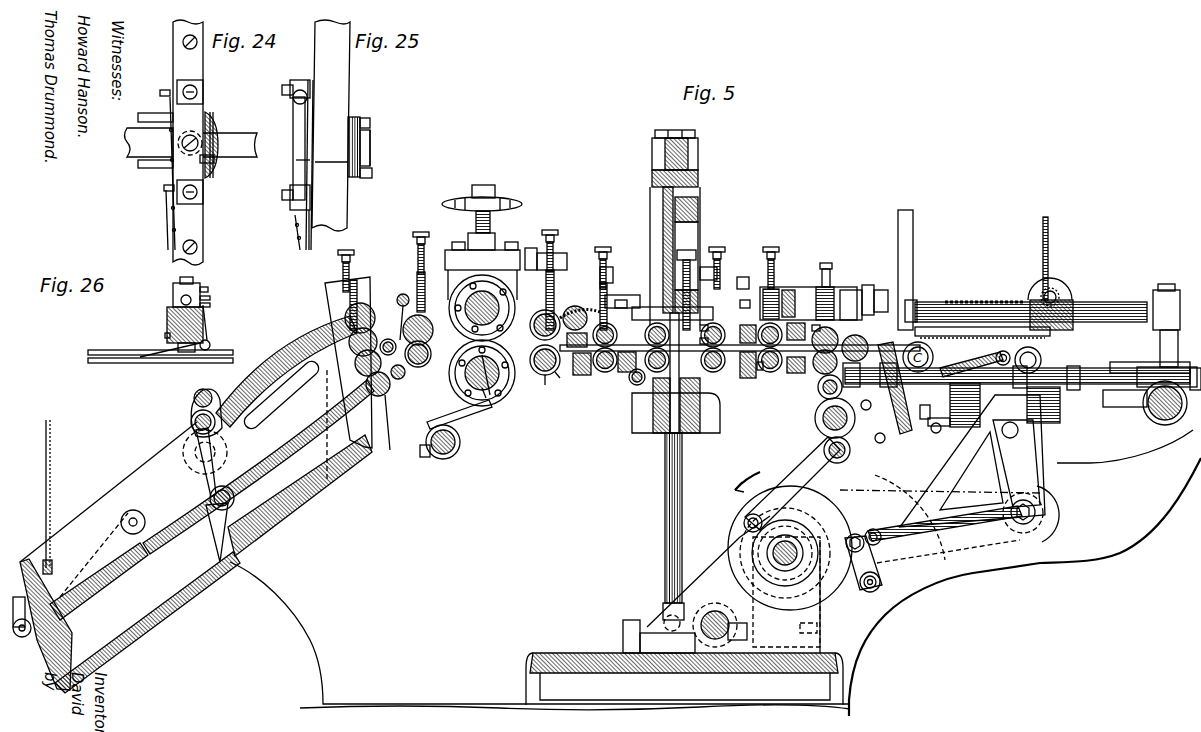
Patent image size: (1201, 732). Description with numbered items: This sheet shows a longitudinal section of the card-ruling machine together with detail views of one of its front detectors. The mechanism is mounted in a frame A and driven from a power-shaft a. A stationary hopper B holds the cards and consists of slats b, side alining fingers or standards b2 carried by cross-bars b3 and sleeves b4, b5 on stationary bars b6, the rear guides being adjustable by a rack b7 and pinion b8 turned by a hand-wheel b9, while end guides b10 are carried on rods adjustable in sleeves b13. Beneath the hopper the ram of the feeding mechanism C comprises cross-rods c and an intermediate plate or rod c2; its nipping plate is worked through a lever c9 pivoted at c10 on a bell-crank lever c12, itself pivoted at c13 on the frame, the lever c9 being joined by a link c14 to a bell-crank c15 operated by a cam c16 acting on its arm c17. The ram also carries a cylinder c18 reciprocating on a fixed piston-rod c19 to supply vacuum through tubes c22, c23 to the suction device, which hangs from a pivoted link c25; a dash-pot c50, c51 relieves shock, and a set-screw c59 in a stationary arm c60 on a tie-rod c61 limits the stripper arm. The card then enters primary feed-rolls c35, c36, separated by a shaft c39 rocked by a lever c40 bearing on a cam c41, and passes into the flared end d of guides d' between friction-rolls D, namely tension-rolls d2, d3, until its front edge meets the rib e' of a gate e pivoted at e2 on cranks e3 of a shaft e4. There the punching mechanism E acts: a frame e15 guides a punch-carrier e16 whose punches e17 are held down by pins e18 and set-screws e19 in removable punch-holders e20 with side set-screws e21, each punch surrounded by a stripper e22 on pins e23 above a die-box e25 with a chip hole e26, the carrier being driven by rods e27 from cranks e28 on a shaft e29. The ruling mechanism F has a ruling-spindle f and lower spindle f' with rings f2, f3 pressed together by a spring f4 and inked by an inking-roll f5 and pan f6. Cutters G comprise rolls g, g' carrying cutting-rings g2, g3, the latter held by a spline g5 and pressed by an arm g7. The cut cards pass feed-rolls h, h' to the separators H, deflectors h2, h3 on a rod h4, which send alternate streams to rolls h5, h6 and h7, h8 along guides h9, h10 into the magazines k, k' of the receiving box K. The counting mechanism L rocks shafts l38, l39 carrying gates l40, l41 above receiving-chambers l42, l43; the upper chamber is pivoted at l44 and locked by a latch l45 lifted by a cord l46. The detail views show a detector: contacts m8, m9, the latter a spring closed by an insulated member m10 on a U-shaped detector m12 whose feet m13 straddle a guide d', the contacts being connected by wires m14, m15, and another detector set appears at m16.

In FIG. 5, the frame A is at (1035, 560).
In FIG. 5, the hopper B is at (1031, 282).
In FIG. 5, the feeding mechanism C is at (845, 279).
In FIG. 5, the friction-rolls D is at (778, 274).
In FIG. 5, the punching mechanism E is at (683, 227).
In FIG. 5, the marking or ruling mechanism F is at (553, 256).
In FIG. 5, the cutters G is at (489, 229).
In FIG. 5, the separators H is at (360, 347).
In FIG. 5, the receiving box or magazine K is at (258, 435).
In FIG. 5, the counting mechanism L is at (187, 413).
In FIG. 5, the power-shaft a is at (800, 540).
In FIG. 5, the slats b is at (946, 326).
In FIG. 5, the side alining fingers or standards b2 is at (1048, 252).
In FIG. 5, the cross-bars b3 is at (862, 292).
In FIG. 5, the sleeves b4 is at (880, 292).
In FIG. 5, the sleeves b5 is at (1070, 326).
In FIG. 5, the stationary tubes or bars b6 is at (1118, 308).
In FIG. 5, the rack b7 is at (976, 302).
In FIG. 5, the pinion b8 is at (1055, 284).
In FIG. 5, the hand-wheel b9 is at (1072, 283).
In FIG. 5, the end guides or standards b10 is at (908, 252).
In FIG. 5, the sleeves b13 is at (914, 295).
In FIG. 5, the cross-rods c is at (1032, 360).
In FIG. 5, the intermediate plate or rod c2 is at (971, 359).
In FIG. 5, the lever c9 is at (1022, 455).
In FIG. 5, the pivot c10 is at (1019, 431).
In FIG. 5, the bell-crank lever c12 is at (1035, 478).
In FIG. 5, the pivot c13 is at (1036, 512).
In FIG. 5, the link c14 is at (950, 538).
In FIG. 5, the bell-crank c15 is at (870, 553).
In FIG. 5, the cam c16 is at (730, 533).
In FIG. 5, the arm c17 is at (855, 590).
In FIG. 5, the cylinder c18 is at (1060, 410).
In FIG. 5, the piston-rod c19 is at (1090, 405).
In FIG. 5, the tube c22 is at (912, 388).
In FIG. 5, the tube c23 is at (940, 435).
In FIG. 5, the pivoted link c25 is at (965, 413).
In FIG. 5, the feed-roll c35 is at (828, 335).
In FIG. 5, the feed-roll c36 is at (830, 414).
In FIG. 5, the shaft c39 is at (826, 448).
In FIG. 5, the lever c40 is at (812, 473).
In FIG. 5, the cam c41 is at (740, 553).
In FIG. 5, the dash-pot arrangement c50 is at (1076, 368).
In FIG. 5, the dash-pot arrangement c51 is at (1125, 364).
In FIG. 5, the set-screw c59 is at (884, 417).
In FIG. 5, the stationary arm c60 is at (920, 429).
In FIG. 5, the tie rod or brace c61 is at (890, 443).
In FIG. 25, the flared open end d is at (389, 148).
In FIG. 26, the flared open end d is at (160, 376).
In FIG. 5, the flared open end d is at (779, 362).
In FIG. 24, the guides d' is at (186, 161).
In FIG. 25, the guides d' is at (381, 146).
In FIG. 26, the guides d' is at (160, 339).
In FIG. 5, the guides d' is at (819, 403).
In FIG. 5, the tension-roll or friction-feed d2 is at (747, 378).
In FIG. 5, the tension-roll or friction-feed d3 is at (780, 318).
In FIG. 5, the gate e is at (740, 347).
In FIG. 5, the rib e' is at (612, 341).
In FIG. 5, the pivot e2 is at (625, 372).
In FIG. 5, the cranks e3 is at (632, 385).
In FIG. 5, the shaft e4 is at (640, 410).
In FIG. 5, the frame e15 is at (690, 150).
In FIG. 5, the punch-carrier e16 is at (675, 232).
In FIG. 5, the punch e17 is at (692, 312).
In FIG. 5, the pin e18 is at (700, 300).
In FIG. 5, the set-screw e19 is at (690, 250).
In FIG. 5, the punch-holder e20 is at (663, 318).
In FIG. 5, the side set-screw e21 is at (655, 325).
In FIG. 5, the stripper e22 is at (698, 337).
In FIG. 5, the pins e23 is at (699, 318).
In FIG. 5, the die-box e25 is at (705, 368).
In FIG. 5, the hole e26 is at (672, 428).
In FIG. 5, the rods e27 is at (664, 526).
In FIG. 5, the cranks e28 is at (700, 600).
In FIG. 5, the shaft e29 is at (713, 640).
In FIG. 5, the principal ruling-spindle f is at (542, 319).
In FIG. 5, the lower spindle f' is at (543, 390).
In FIG. 5, the rings f2 is at (530, 360).
In FIG. 5, the rings f3 is at (556, 376).
In FIG. 5, the spring f4 is at (552, 300).
In FIG. 5, the inking-roll f5 is at (571, 312).
In FIG. 5, the pan f6 is at (578, 364).
In FIG. 5, the upper roll g is at (476, 308).
In FIG. 5, the lower roll g' is at (492, 412).
In FIG. 5, the cutting-rings g2 is at (455, 332).
In FIG. 5, the cutting-rings g3 is at (448, 384).
In FIG. 5, the spline g5 is at (483, 358).
In FIG. 5, the arm g7 is at (466, 428).
In FIG. 5, the feed-roll h is at (419, 288).
In FIG. 5, the feed-roll h' is at (418, 368).
In FIG. 5, the deflector h2 is at (392, 352).
In FIG. 5, the deflector h3 is at (400, 300).
In FIG. 5, the transverse rod h4 is at (393, 433).
In FIG. 5, the feed-roll h5 is at (378, 396).
In FIG. 5, the feed-roll h6 is at (355, 363).
In FIG. 5, the roll h7 is at (345, 312).
In FIG. 5, the roll h8 is at (350, 340).
In FIG. 5, the guides h9 is at (398, 380).
In FIG. 5, the guides h10 is at (370, 300).
In FIG. 5, the magazine k is at (300, 495).
In FIG. 5, the magazine k' is at (276, 390).
In FIG. 5, the shaft l38 is at (193, 423).
In FIG. 5, the shaft l39 is at (235, 498).
In FIG. 5, the gate l40 is at (200, 470).
In FIG. 5, the gate l41 is at (210, 540).
In FIG. 5, the extension or receiving-chamber l42 is at (66, 555).
In FIG. 5, the receiving-chamber l43 is at (108, 625).
In FIG. 5, the pivot l44 is at (128, 512).
In FIG. 5, the latch l45 is at (26, 638).
In FIG. 5, the cord or pulley l46 is at (44, 497).
In FIG. 24, the contact m8 is at (163, 91).
In FIG. 25, the contact m8 is at (295, 184).
In FIG. 26, the contact m8 is at (212, 296).
In FIG. 5, the contact m8 is at (780, 315).
In FIG. 24, the contact m9 is at (216, 160).
In FIG. 25, the contact m9 is at (298, 139).
In FIG. 26, the contact m9 is at (211, 304).
In FIG. 24, the insulated member m10 is at (212, 148).
In FIG. 25, the insulated member m10 is at (296, 160).
In FIG. 26, the insulated member m10 is at (207, 287).
In FIG. 25, the U-shaped detector m12 is at (352, 116).
In FIG. 26, the U-shaped detector m12 is at (208, 345).
In FIG. 5, the U-shaped detector m12 is at (763, 374).
In FIG. 24, the feet m13 is at (155, 119).
In FIG. 25, the feet m13 is at (368, 121).
In FIG. 26, the feet m13 is at (163, 355).
In FIG. 24, the wire m14 is at (162, 228).
In FIG. 25, the wire m14 is at (292, 232).
In FIG. 26, the wire m14 is at (163, 318).
In FIG. 24, the wire m15 is at (180, 226).
In FIG. 25, the wire m15 is at (312, 226).
In FIG. 26, the wire m15 is at (172, 287).
In FIG. 5, the detector set m16 is at (827, 262).